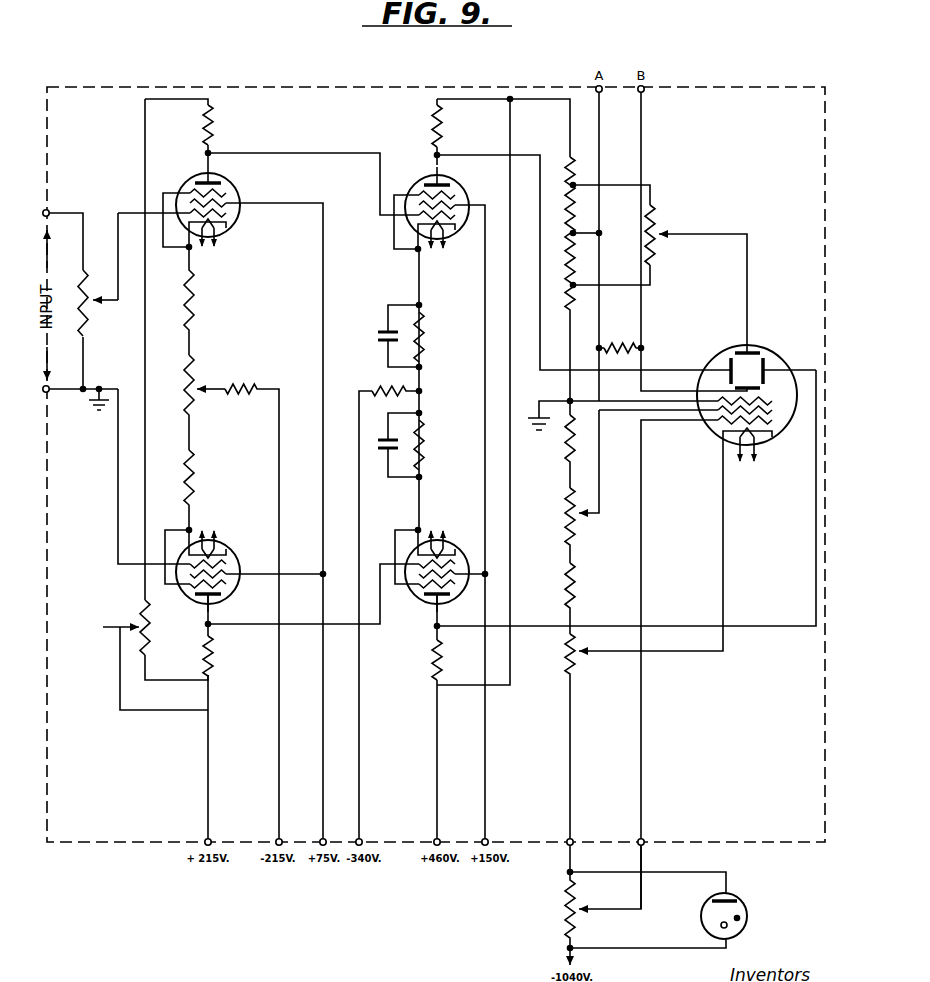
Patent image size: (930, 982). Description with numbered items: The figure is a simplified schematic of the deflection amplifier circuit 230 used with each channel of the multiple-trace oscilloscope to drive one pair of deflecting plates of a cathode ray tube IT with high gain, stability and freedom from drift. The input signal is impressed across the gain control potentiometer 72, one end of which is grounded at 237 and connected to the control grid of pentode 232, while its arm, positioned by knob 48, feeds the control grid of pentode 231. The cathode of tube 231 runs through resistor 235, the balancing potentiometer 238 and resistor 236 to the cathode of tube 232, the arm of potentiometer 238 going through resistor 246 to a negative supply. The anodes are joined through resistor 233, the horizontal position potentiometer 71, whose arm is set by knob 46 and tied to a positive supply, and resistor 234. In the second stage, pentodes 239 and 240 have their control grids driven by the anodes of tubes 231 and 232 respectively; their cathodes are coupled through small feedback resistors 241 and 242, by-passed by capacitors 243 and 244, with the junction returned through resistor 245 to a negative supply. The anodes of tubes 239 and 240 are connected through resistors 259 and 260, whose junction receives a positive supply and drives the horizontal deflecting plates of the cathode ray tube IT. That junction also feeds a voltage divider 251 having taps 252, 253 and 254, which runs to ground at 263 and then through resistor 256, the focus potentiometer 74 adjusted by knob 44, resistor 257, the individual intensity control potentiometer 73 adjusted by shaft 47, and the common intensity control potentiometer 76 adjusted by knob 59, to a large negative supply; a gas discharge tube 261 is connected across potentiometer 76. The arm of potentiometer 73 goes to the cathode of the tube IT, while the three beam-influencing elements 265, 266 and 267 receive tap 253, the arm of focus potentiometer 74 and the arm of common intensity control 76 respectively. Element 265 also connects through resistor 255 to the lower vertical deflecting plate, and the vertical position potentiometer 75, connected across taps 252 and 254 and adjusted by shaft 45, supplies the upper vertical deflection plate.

The amplifier circuit 230 is at (298, 85).
The resistor 233 is at (215, 128).
The pentode 231 is at (236, 190).
The resistor 235 is at (200, 305).
The balancing potentiometer 238 is at (196, 366).
The resistor 246 is at (242, 385).
The resistor 236 is at (197, 478).
The pentode 232 is at (224, 549).
The resistor 234 is at (214, 660).
The horizontal position potentiometer 71 is at (151, 626).
The knob 46 is at (109, 628).
The gain control potentiometer 72 is at (80, 290).
The knob 48 is at (100, 298).
The ground 237 is at (92, 398).
The resistor 259 is at (431, 128).
The pentode 239 is at (413, 183).
The capacitor 243 is at (376, 332).
The resistor 241 is at (422, 334).
The resistor 245 is at (379, 386).
The resistor 242 is at (422, 445).
The capacitor 244 is at (380, 450).
The pentode 240 is at (415, 600).
The resistor 260 is at (431, 660).
The voltage divider 251 is at (565, 165).
The tap 252 is at (578, 183).
The tap 253 is at (578, 231).
The tap 254 is at (578, 283).
The vertical position potentiometer 75 is at (654, 218).
The shaft or set screw 45 is at (663, 240).
The resistor 255 is at (613, 345).
The ground 263 is at (565, 400).
The resistor 256 is at (563, 452).
The focus potentiometer 74 is at (565, 506).
The knob 44 is at (578, 518).
The resistor 257 is at (563, 585).
The shaft or set screw 47 is at (586, 650).
The individual intensity control potentiometer 73 is at (576, 660).
The element 265 is at (716, 400).
The element 266 is at (722, 418).
The element 267 is at (762, 424).
The cathode ray tube IT is at (683, 616).
The knob 59 is at (590, 912).
The common intensity control potentiometer 76 is at (566, 928).
The gas discharge tube 261 is at (748, 916).